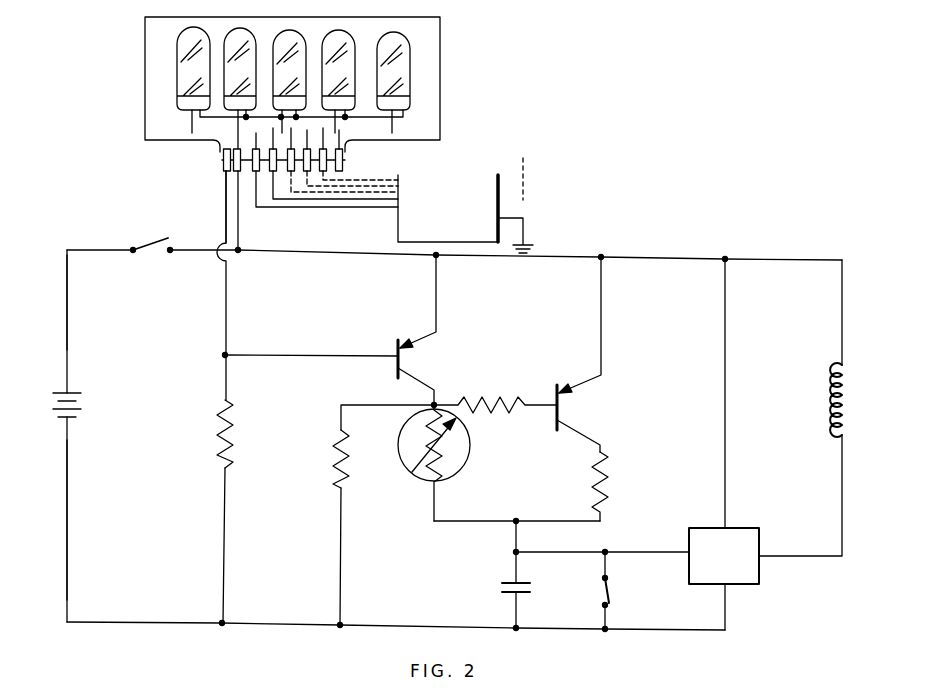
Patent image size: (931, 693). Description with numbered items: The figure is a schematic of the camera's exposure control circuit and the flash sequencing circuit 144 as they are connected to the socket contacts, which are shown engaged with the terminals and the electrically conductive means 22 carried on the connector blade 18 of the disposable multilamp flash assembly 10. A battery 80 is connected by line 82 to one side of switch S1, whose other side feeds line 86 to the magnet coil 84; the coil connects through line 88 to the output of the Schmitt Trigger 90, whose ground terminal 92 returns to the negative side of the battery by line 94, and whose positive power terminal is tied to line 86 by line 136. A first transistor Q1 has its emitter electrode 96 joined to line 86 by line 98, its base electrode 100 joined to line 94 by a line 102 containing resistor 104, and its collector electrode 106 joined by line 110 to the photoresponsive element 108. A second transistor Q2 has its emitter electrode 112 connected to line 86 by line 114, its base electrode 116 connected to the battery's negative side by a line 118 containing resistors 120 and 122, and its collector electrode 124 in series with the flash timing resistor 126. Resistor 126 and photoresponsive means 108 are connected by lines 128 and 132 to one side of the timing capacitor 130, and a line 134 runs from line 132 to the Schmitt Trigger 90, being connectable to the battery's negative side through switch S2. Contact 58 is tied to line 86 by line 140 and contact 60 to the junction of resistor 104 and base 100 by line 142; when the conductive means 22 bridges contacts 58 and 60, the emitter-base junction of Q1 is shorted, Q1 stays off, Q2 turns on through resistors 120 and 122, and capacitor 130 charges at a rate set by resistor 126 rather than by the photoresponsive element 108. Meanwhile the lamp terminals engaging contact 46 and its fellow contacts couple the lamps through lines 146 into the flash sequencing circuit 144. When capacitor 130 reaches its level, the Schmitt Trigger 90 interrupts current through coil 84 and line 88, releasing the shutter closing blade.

The flash assembly 10 is at (476, 78).
The connector blade 18 is at (346, 157).
The electrically conductive means 22 is at (220, 154).
The contact 46 is at (342, 162).
The contact 58 is at (238, 172).
The contact 60 is at (228, 164).
The battery 80 is at (66, 421).
The line 82 is at (66, 288).
The magnet coil 84 is at (848, 390).
The line 86 is at (576, 252).
The line 88 is at (843, 488).
The Schmitt Trigger 90 is at (746, 528).
The ground terminal 92 is at (726, 590).
The line 94 is at (66, 548).
The emitter electrode 96 is at (428, 337).
The line 98 is at (437, 282).
The base electrode 100 is at (342, 352).
The line 102 is at (224, 380).
The resistor 104 is at (216, 430).
The collector electrode 106 is at (422, 380).
The photoresponsive element 108 is at (426, 476).
The line 110 is at (440, 402).
The emitter electrode 112 is at (590, 380).
The line 114 is at (602, 311).
The base electrode 116 is at (540, 408).
The line 118 is at (340, 546).
The resistor 120 is at (495, 391).
The resistor 122 is at (336, 456).
The collector electrode 124 is at (588, 440).
The resistor 126 is at (606, 480).
The line 128 is at (434, 523).
The capacitor 130 is at (510, 593).
The line 132 is at (514, 552).
The line 134 is at (656, 544).
The line 136 is at (724, 388).
The line 140 is at (239, 232).
The line 142 is at (226, 209).
The flash sequencing circuit 144 is at (436, 176).
The lines 146 is at (368, 214).
The switch S1 is at (152, 256).
The switch S2 is at (592, 592).
The first transistor Q1 is at (431, 329).
The second transistor Q2 is at (583, 361).